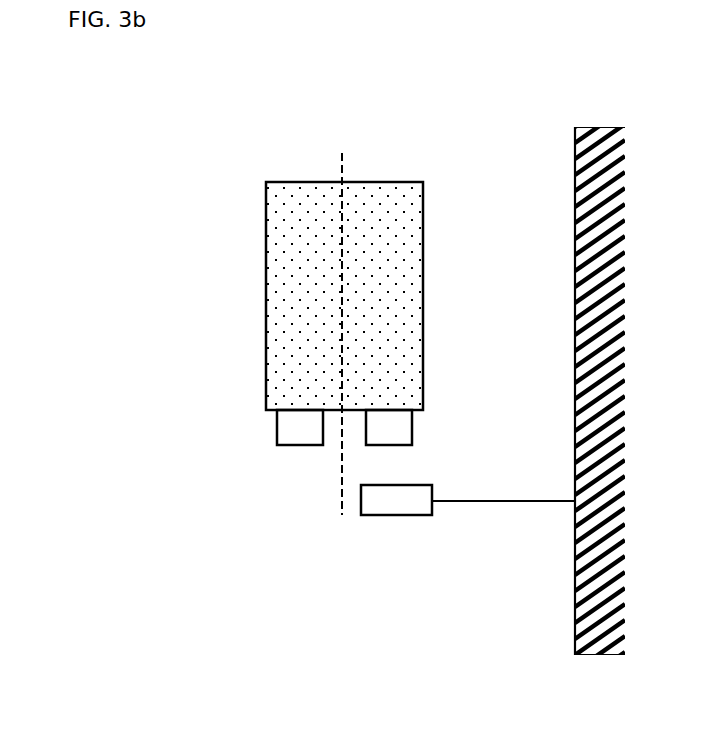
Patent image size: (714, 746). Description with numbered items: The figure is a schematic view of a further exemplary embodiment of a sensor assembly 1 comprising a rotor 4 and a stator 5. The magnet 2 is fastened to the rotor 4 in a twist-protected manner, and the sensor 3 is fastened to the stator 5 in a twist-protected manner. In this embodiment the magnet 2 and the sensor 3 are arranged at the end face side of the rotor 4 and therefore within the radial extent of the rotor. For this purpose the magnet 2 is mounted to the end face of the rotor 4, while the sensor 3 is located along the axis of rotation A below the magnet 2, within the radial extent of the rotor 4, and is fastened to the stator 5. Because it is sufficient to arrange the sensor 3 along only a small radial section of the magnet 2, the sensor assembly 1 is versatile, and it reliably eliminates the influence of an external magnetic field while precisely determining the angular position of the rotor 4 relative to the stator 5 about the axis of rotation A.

The sensor assembly 1 is at (469, 576).
The magnet 2 is at (277, 433).
The sensor 3 is at (386, 515).
The rotor 4 is at (266, 278).
The stator 5 is at (575, 163).
The axis of rotation A is at (342, 499).